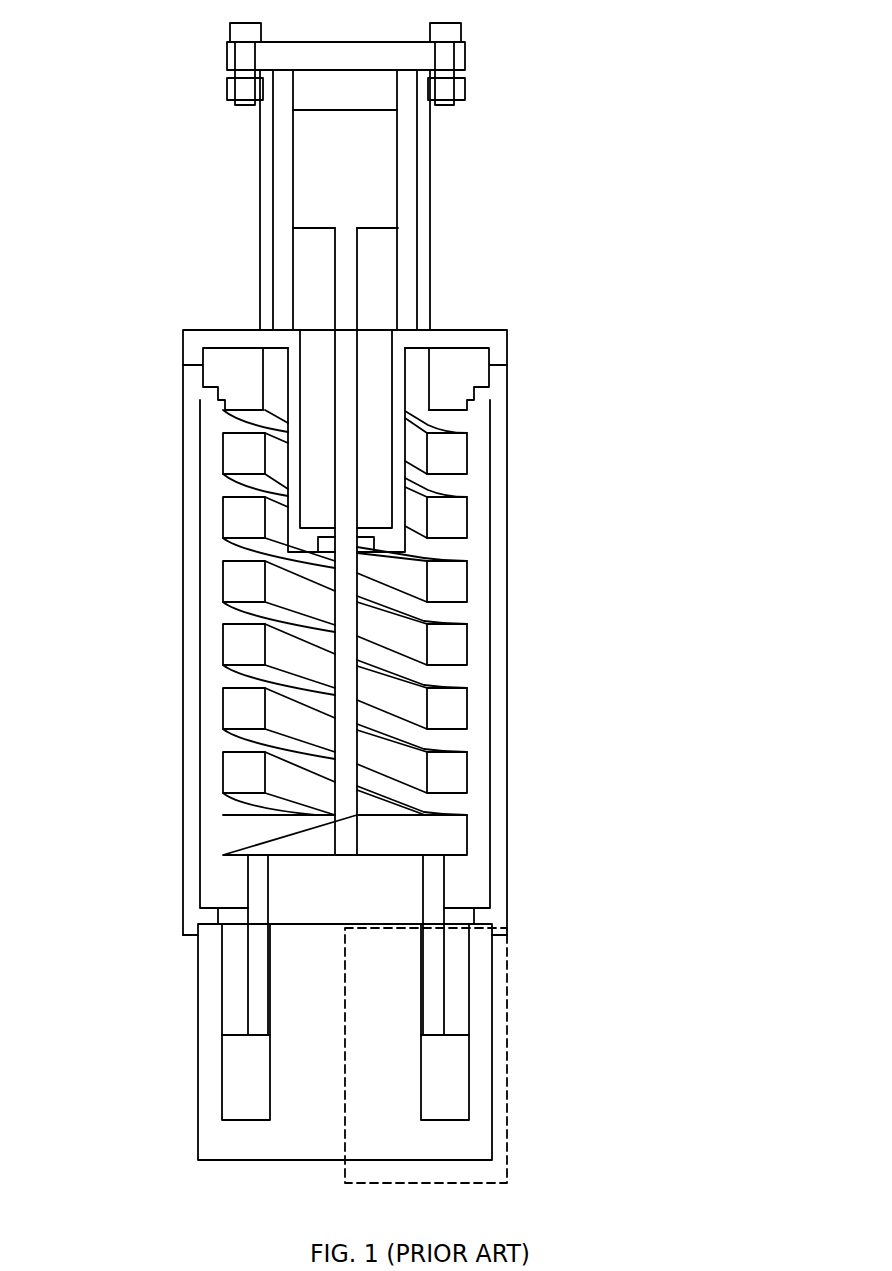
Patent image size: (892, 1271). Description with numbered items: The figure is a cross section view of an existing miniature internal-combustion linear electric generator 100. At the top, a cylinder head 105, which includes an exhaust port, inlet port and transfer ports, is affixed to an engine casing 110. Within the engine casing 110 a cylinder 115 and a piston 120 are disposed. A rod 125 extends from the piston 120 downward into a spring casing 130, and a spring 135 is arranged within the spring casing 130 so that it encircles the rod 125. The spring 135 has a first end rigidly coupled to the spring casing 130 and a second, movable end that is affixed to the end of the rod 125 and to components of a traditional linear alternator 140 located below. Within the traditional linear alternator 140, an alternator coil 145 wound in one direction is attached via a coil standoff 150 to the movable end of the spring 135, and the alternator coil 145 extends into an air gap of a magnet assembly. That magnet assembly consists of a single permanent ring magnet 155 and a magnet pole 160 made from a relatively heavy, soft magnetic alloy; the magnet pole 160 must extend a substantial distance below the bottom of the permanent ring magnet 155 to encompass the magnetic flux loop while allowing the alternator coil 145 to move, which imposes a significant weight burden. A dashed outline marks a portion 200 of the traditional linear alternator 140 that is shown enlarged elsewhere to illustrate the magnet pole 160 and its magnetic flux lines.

The miniature internal-combustion linear electric generator 100 is at (634, 40).
The cylinder head 105 is at (465, 57).
The engine casing 110 is at (433, 318).
The cylinder 115 is at (408, 240).
The piston 120 is at (362, 184).
The rod 125 is at (347, 297).
The spring casing 130 is at (508, 610).
The spring 135 is at (458, 462).
The traditional linear alternator 140 is at (182, 935).
The alternator coil 145 is at (440, 968).
The coil standoff 150 is at (440, 893).
The permanent ring magnet 155 is at (463, 1020).
The magnet pole 160 is at (463, 1105).
The portion 200 is at (508, 1157).